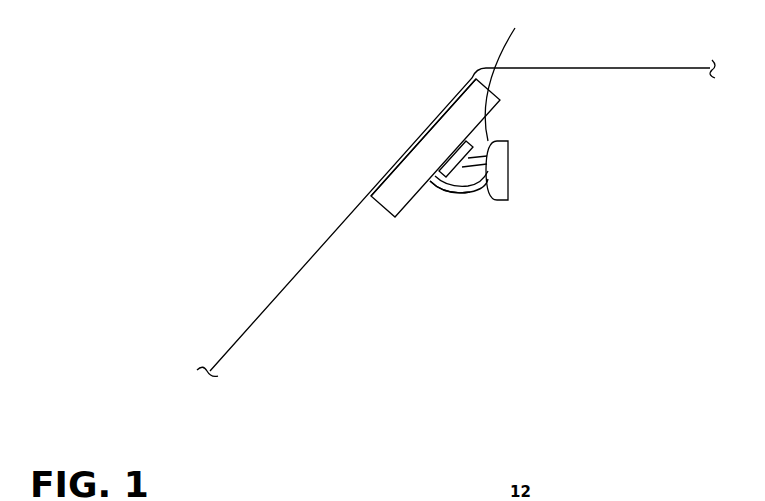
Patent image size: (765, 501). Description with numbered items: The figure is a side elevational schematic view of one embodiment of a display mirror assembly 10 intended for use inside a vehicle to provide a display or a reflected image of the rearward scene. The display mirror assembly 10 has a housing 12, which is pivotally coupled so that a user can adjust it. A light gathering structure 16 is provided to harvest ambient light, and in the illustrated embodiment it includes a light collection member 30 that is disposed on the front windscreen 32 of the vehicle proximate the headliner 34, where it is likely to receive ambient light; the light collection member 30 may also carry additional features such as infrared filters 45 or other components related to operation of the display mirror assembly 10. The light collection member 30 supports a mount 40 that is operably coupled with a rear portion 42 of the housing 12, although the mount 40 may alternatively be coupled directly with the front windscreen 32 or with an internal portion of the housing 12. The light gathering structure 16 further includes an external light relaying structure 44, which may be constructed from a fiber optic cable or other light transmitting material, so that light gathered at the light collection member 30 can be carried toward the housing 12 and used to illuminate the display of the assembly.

The display mirror assembly 10 is at (567, 163).
The housing 12 is at (500, 141).
The light gathering structure 16 is at (457, 185).
The light collection member 30 is at (467, 103).
The front windscreen 32 is at (323, 243).
The headliner 34 is at (604, 67).
The mount 40 is at (452, 156).
The rear portion 42 is at (509, 74).
The external light relaying structure 44 is at (468, 190).
The infrared filters 45 is at (387, 170).